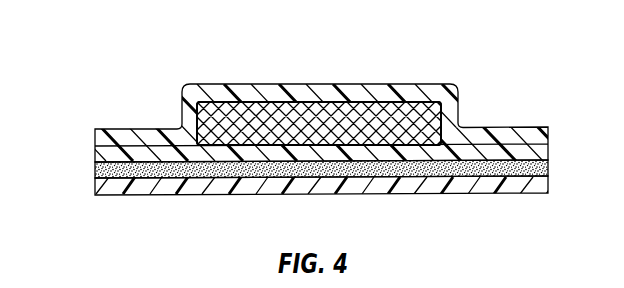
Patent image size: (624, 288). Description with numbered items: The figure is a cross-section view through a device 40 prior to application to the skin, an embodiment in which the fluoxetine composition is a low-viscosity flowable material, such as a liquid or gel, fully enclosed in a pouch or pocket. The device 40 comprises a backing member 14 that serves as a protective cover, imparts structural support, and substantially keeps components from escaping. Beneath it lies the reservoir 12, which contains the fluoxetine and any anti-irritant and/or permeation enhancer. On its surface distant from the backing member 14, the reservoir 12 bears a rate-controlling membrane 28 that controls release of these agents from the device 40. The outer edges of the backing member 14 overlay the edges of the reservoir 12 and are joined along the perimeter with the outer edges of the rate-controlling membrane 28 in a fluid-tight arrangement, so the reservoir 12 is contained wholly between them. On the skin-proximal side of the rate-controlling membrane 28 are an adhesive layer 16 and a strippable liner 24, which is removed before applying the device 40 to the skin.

The device 40 is at (303, 105).
The reservoir 12 is at (453, 96).
The backing member 14 is at (183, 110).
The adhesive layer 16 is at (93, 165).
The strippable liner 24 is at (547, 184).
The rate-controlling membrane 28 is at (542, 153).